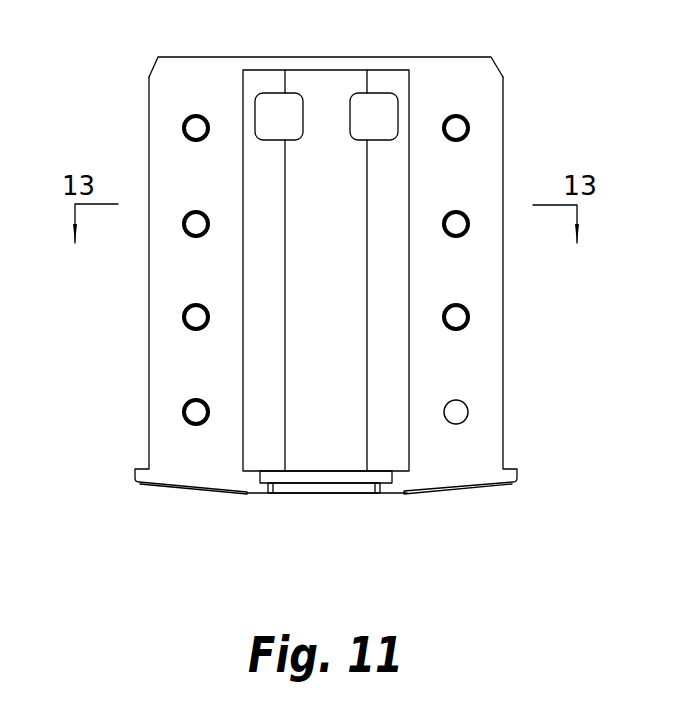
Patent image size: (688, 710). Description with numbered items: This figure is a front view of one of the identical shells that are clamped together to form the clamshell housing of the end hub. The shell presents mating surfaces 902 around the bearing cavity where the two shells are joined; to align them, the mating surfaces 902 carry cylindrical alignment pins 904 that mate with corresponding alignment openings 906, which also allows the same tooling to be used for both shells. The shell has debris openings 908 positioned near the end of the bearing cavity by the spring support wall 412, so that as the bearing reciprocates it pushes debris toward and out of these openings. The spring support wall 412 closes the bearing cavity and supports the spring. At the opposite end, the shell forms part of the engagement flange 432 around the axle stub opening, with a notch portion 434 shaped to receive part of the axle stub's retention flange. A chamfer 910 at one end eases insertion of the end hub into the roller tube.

The mating surfaces 902 is at (498, 171).
The alignment pins 904 is at (194, 412).
The alignment openings 906 is at (192, 314).
The debris openings 908 is at (257, 93).
The chamfer 910 is at (158, 58).
The spring support wall 412 is at (345, 69).
The engagement flange 432 is at (367, 487).
The notch portion 434 is at (266, 484).